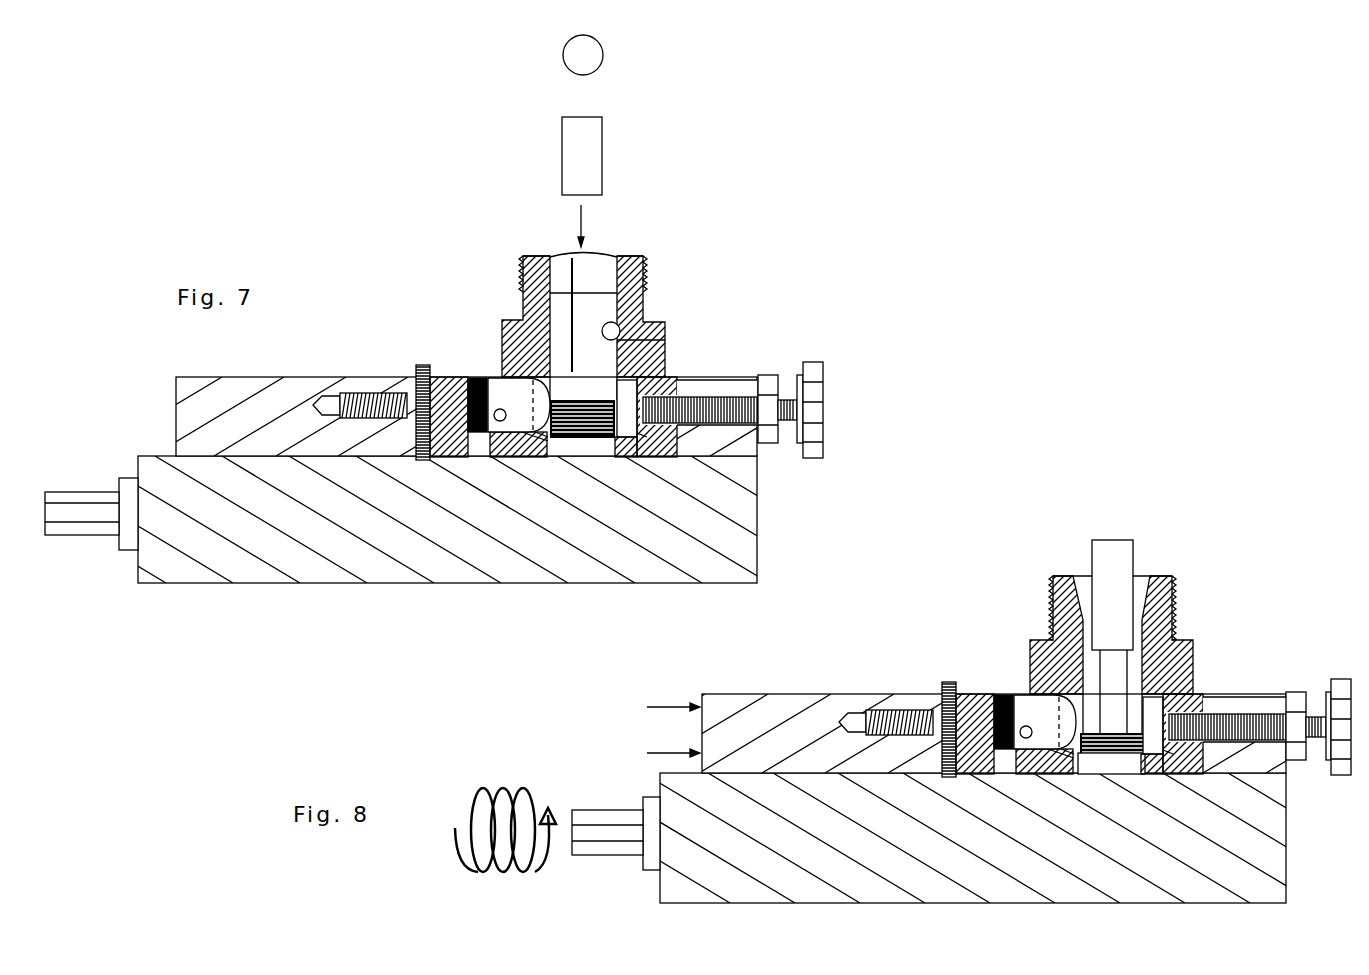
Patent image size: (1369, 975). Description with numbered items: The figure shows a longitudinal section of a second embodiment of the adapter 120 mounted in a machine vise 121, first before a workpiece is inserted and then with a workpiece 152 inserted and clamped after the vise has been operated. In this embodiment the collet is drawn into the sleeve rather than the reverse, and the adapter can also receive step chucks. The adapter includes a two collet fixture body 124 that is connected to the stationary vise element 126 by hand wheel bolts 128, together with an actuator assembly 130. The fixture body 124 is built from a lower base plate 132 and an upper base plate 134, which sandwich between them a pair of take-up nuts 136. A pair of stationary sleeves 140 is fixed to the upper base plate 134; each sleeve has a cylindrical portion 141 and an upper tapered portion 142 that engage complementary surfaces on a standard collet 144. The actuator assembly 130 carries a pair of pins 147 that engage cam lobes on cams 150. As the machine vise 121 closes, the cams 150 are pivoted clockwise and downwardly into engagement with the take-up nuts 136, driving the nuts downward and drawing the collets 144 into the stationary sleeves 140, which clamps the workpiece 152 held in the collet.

In FIG. 7, the adapter 120 is at (490, 255).
In FIG. 8, the adapter 120 is at (1111, 635).
In FIG. 7, the machine vise 121 is at (325, 500).
In FIG. 8, the machine vise 121 is at (941, 838).
In FIG. 7, the two collet fixture body 124 is at (680, 365).
In FIG. 8, the two collet fixture body 124 is at (1213, 734).
In FIG. 7, the stationary vise element 126 is at (740, 380).
In FIG. 8, the stationary vise element 126 is at (1246, 726).
In FIG. 7, the hand wheel bolts 128 is at (823, 385).
In FIG. 8, the hand wheel bolts 128 is at (1338, 727).
In FIG. 7, the actuator assembly 130 is at (407, 360).
In FIG. 8, the actuator assembly 130 is at (886, 722).
In FIG. 7, the lower base plate 132 is at (675, 458).
In FIG. 8, the lower base plate 132 is at (939, 733).
In FIG. 7, the upper base plate 134 is at (490, 378).
In FIG. 7, the take-up nuts 136 is at (543, 440).
In FIG. 8, the take-up nuts 136 is at (1183, 777).
In FIG. 7, the stationary sleeves 140 is at (535, 257).
In FIG. 7, the cylindrical portion 141 is at (665, 340).
In FIG. 7, the upper tapered portion 142 is at (605, 250).
In FIG. 7, the 5C collet 144 is at (565, 248).
In FIG. 8, the 5C collet 144 is at (1140, 576).
In FIG. 7, the pins 147 is at (470, 377).
In FIG. 8, the pins 147 is at (995, 696).
In FIG. 7, the cams 150 is at (497, 378).
In FIG. 8, the cams 150 is at (1043, 713).
In FIG. 7, the workpiece 152 is at (568, 140).
In FIG. 8, the workpiece 152 is at (1113, 557).